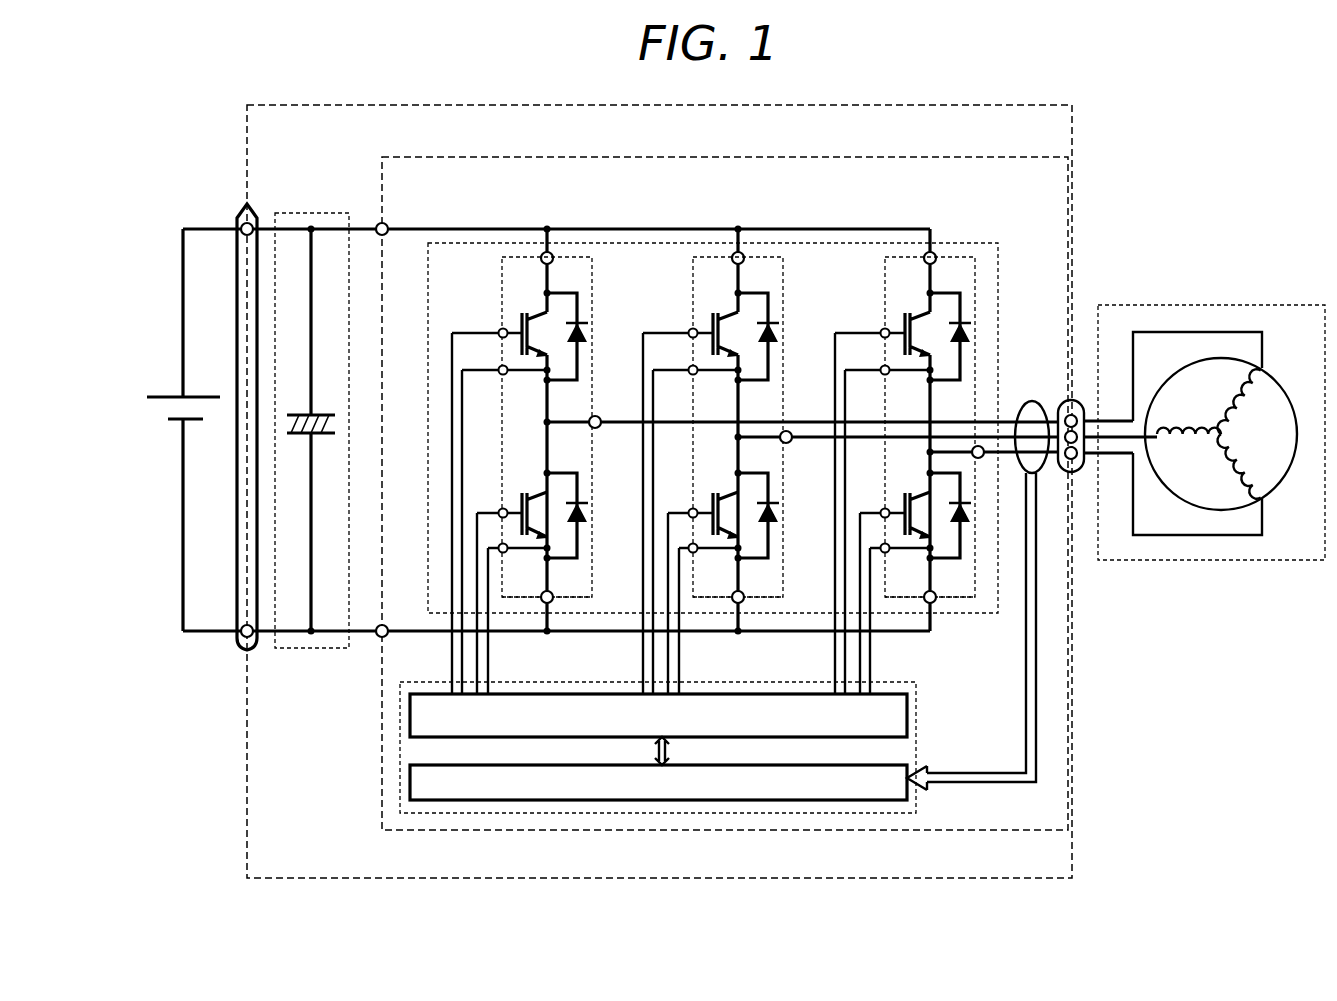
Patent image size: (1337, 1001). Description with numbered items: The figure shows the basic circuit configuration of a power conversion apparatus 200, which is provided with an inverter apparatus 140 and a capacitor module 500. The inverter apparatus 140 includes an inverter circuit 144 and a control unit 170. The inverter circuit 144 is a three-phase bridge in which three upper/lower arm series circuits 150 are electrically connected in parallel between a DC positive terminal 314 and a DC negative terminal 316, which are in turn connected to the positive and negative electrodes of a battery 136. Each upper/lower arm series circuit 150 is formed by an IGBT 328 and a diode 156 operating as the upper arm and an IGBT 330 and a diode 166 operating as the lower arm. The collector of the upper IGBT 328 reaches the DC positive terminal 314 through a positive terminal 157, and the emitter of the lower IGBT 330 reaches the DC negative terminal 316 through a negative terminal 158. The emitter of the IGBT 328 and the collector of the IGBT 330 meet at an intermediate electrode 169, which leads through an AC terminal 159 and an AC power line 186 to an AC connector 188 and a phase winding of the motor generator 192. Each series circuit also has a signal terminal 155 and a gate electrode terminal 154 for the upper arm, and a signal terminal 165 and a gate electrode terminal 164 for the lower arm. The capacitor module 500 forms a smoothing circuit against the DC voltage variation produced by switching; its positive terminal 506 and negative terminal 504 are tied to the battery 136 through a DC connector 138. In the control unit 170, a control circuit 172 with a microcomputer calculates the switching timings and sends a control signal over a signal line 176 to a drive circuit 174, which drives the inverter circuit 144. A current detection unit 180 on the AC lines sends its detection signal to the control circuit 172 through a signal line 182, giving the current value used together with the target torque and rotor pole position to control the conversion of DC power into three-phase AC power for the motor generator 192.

The battery 136 is at (155, 422).
The DC connector 138 is at (240, 220).
The inverter apparatus 140 is at (415, 157).
The inverter circuit 144 is at (996, 243).
The upper/lower arm series circuit 150 is at (525, 262).
The gate electrode terminal 154 is at (498, 330).
The signal terminal 155 is at (498, 370).
The diode 156 is at (585, 332).
The positive terminal (P terminal) 157 is at (555, 253).
The negative terminal (N terminal) 158 is at (554, 604).
The AC terminal 159 is at (600, 414).
The gate electrode terminal 164 is at (500, 510).
The signal terminal 165 is at (505, 552).
The diode 166 is at (588, 515).
The intermediate electrode 169 is at (543, 422).
The control unit 170 is at (436, 828).
The control circuit 172 is at (408, 782).
The drive circuit 174 is at (408, 712).
The signal line 176 is at (672, 744).
The current detection unit 180 is at (1017, 412).
The signal line 182 is at (1025, 702).
The AC power line (AC bus bar) 186 is at (627, 428).
The AC connector 188 is at (1060, 400).
The motor generator 192 is at (1192, 305).
The power conversion apparatus 200 is at (300, 106).
The DC positive terminal 314 is at (386, 222).
The DC negative terminal 316 is at (388, 625).
The IGBT 328 is at (515, 312).
The IGBT 330 is at (523, 500).
The capacitor module 500 is at (258, 658).
The negative terminal 504 is at (315, 645).
The positive terminal 506 is at (311, 213).